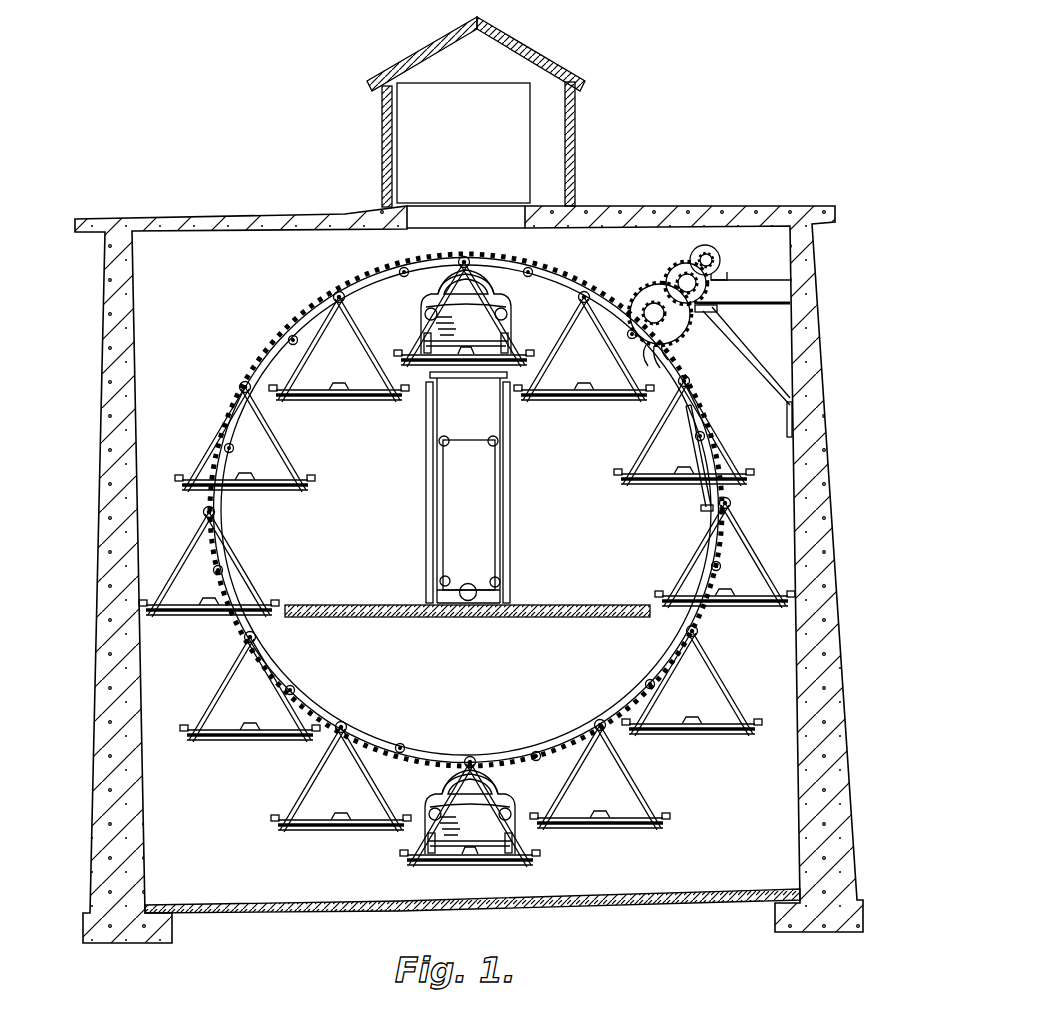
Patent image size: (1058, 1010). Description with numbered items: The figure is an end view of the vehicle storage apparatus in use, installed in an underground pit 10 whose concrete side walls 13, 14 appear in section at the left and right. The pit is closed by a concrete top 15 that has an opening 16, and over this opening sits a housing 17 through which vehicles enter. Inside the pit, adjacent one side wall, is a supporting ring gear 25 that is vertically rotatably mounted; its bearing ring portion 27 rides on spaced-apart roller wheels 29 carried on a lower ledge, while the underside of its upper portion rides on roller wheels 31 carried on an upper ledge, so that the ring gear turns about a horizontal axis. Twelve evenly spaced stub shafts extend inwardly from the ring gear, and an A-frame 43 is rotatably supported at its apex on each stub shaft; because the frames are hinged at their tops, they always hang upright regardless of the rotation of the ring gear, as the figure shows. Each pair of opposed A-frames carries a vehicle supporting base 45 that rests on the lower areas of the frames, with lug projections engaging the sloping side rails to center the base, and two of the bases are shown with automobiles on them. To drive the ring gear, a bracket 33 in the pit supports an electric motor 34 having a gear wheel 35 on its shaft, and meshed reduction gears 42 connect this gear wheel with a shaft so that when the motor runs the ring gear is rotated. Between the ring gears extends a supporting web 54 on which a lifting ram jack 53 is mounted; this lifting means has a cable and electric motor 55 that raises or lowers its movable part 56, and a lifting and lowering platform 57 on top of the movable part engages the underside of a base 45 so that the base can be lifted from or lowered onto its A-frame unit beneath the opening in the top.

The underground pit 10 is at (158, 285).
The concrete side wall 13 is at (131, 897).
The concrete side wall 14 is at (812, 863).
The concrete top 15 is at (279, 218).
The opening 16 is at (428, 212).
The housing 17 is at (383, 134).
The supporting ring gear 25 is at (266, 351).
The bearing ring portion 27 is at (223, 530).
The roller wheels 29 is at (285, 692).
The roller wheels 31 is at (401, 277).
The bracket 33 is at (763, 292).
The electric motor 34 is at (696, 259).
The gear wheel 35 is at (717, 256).
The reduction gears 42 is at (689, 332).
The A-frame 43 is at (419, 335).
The vehicle supporting base 45 is at (519, 343).
The lifting ram jack 53 is at (515, 532).
The supporting web 54 is at (363, 605).
The cable and electric motor 55 is at (468, 585).
The movable part 56 is at (500, 414).
The lifting and lowering platform 57 is at (453, 377).